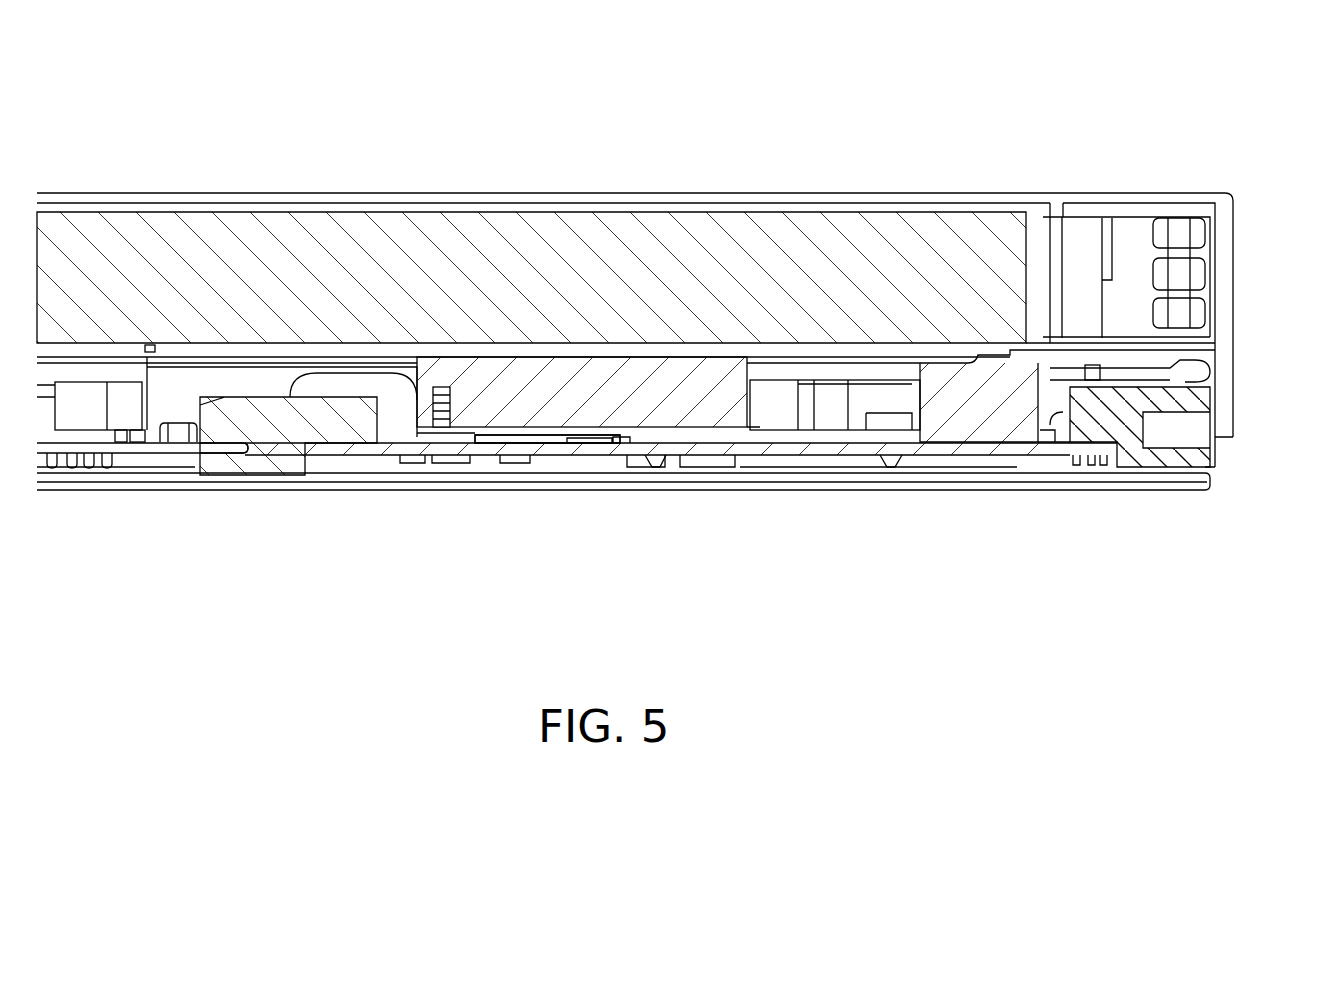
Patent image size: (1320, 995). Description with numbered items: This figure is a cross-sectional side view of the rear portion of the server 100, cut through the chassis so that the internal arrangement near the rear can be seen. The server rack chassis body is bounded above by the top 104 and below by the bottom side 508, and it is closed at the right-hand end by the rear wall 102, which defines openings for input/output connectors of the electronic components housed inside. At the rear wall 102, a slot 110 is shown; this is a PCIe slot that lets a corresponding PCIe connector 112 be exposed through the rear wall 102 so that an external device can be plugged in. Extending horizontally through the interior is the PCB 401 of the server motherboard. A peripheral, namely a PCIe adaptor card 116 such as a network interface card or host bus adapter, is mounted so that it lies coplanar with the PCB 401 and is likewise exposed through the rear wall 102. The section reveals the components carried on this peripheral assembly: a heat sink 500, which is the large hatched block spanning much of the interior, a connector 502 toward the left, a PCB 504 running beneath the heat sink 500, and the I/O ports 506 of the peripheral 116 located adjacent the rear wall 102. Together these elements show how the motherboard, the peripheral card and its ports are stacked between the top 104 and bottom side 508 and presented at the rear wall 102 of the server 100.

The server 100 is at (1090, 146).
The rear wall 102 is at (1213, 465).
The top 104 is at (915, 193).
The slot 110 is at (1208, 222).
The PCIe connector 112 is at (1212, 280).
The PCIe adaptor card 116 is at (1213, 443).
The PCB 401 is at (128, 443).
The heat sink 500 is at (556, 405).
The connector 502 is at (260, 450).
The PCB 504 is at (628, 455).
The I/O ports 506 is at (1142, 463).
The bottom side 508 is at (883, 492).